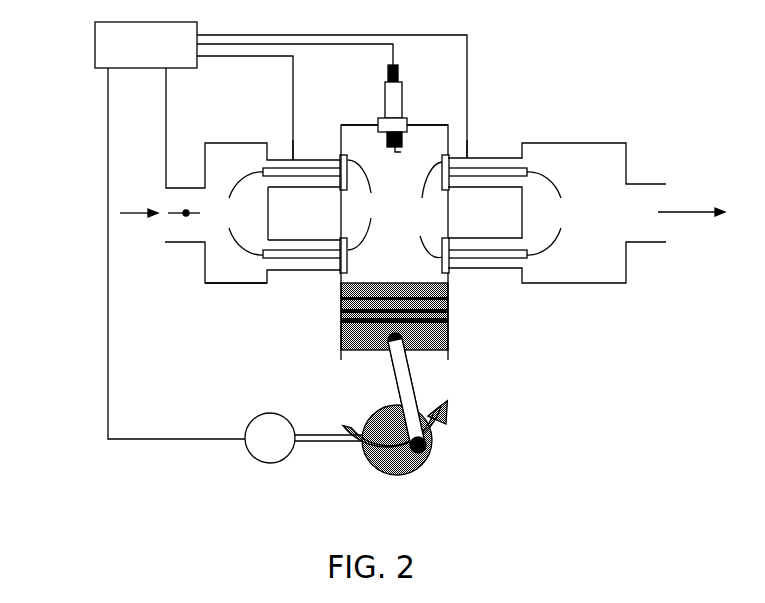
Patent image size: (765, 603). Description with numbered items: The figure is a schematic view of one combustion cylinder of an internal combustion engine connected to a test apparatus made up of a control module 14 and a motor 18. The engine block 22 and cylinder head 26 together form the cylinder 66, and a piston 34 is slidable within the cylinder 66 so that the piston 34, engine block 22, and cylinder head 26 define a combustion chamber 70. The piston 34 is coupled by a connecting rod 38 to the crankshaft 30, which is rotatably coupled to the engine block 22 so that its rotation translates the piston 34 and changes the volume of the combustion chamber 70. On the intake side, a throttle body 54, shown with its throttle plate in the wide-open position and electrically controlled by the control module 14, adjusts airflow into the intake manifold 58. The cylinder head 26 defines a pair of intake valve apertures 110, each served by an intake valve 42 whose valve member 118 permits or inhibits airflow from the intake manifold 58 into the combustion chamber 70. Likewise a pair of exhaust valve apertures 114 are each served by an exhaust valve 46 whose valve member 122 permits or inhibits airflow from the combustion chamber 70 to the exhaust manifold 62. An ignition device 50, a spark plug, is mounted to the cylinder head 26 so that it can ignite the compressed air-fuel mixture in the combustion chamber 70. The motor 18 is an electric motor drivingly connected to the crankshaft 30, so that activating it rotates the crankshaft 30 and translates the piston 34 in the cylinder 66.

The control module 14 is at (95, 42).
The motor 18 is at (248, 453).
The engine block 22 is at (340, 340).
The cylinder head 26 is at (442, 143).
The crankshaft 30 is at (428, 455).
The piston 34 is at (440, 332).
The connecting rod 38 is at (412, 365).
The intake valve 42 is at (276, 213).
The exhaust valve 46 is at (512, 213).
The ignition device 50 is at (402, 103).
The throttle body 54 is at (190, 243).
The intake manifold 58 is at (237, 283).
The exhaust manifold 62 is at (563, 148).
The cylinder 66 is at (338, 130).
The combustion chamber 70 is at (463, 150).
The intake valve aperture 110 is at (323, 158).
The exhaust valve aperture 114 is at (460, 157).
The valve member 118 is at (371, 205).
The valve member 122 is at (421, 210).